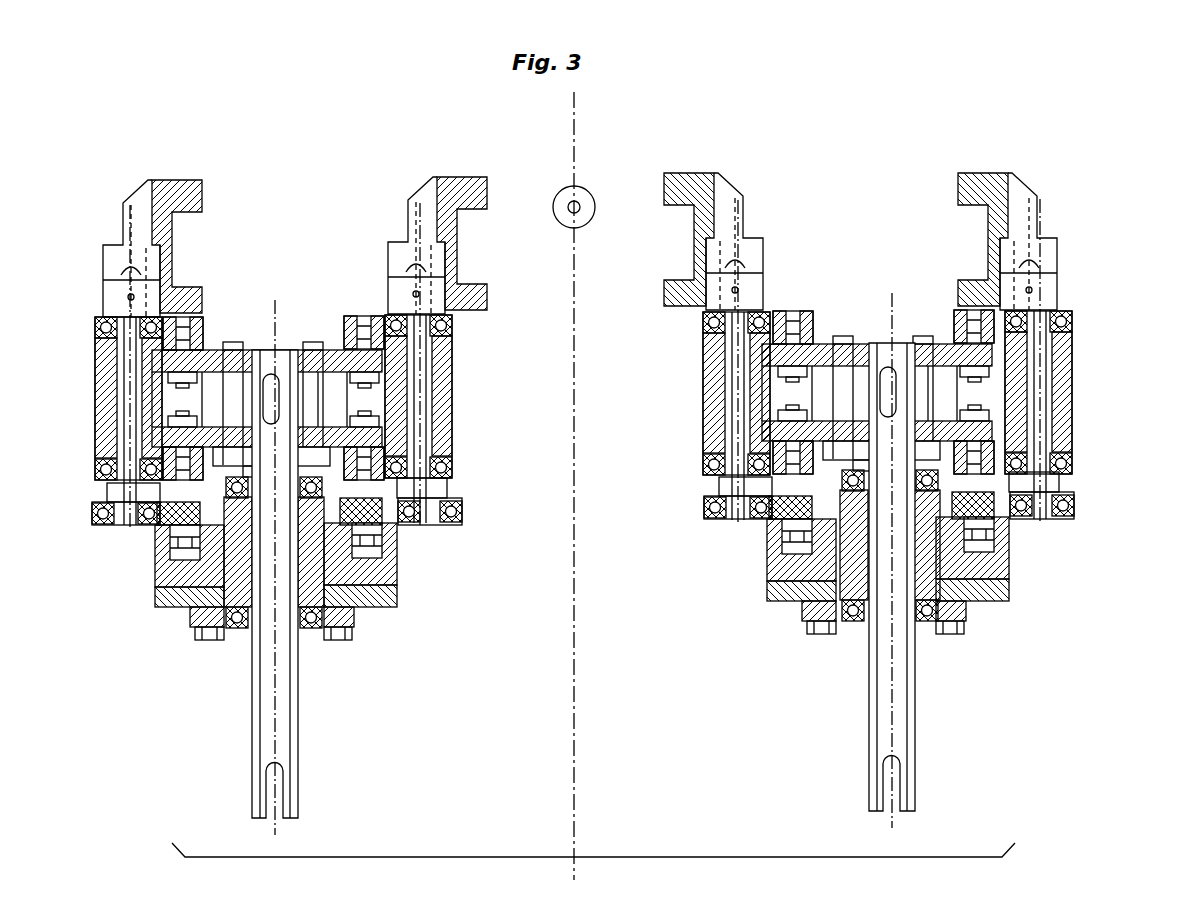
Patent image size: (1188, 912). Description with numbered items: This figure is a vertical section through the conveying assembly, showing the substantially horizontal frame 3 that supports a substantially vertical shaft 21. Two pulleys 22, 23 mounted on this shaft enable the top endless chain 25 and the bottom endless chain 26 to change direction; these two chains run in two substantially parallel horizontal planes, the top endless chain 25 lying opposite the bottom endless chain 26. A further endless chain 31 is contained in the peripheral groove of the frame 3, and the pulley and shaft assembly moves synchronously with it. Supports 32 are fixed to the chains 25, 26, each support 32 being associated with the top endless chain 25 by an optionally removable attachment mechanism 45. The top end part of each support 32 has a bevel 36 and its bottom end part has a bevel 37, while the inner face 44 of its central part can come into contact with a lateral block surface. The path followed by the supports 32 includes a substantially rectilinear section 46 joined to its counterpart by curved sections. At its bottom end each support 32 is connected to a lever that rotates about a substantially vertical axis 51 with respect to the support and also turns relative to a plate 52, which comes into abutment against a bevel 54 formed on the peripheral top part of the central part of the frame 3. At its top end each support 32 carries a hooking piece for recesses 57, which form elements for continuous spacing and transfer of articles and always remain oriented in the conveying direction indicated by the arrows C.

The frame 3 is at (356, 585).
The shaft 21 is at (283, 735).
The pulley 22 is at (310, 351).
The pulley 23 is at (185, 364).
The top endless chain 25 is at (215, 347).
The bottom endless chain 26 is at (147, 525).
The endless chain 31 is at (355, 578).
The support 32 is at (100, 433).
The bevel 36 is at (143, 343).
The bevel 37 is at (97, 470).
The inner face 44 is at (142, 377).
The attachment mechanism 45 is at (192, 352).
The rectilinear section 46 is at (165, 533).
The vertical axis 51 is at (128, 403).
The plate 52 is at (380, 548).
The bevel 54 is at (190, 607).
The recess 57 is at (175, 202).
The conveying direction arrow C is at (593, 197).